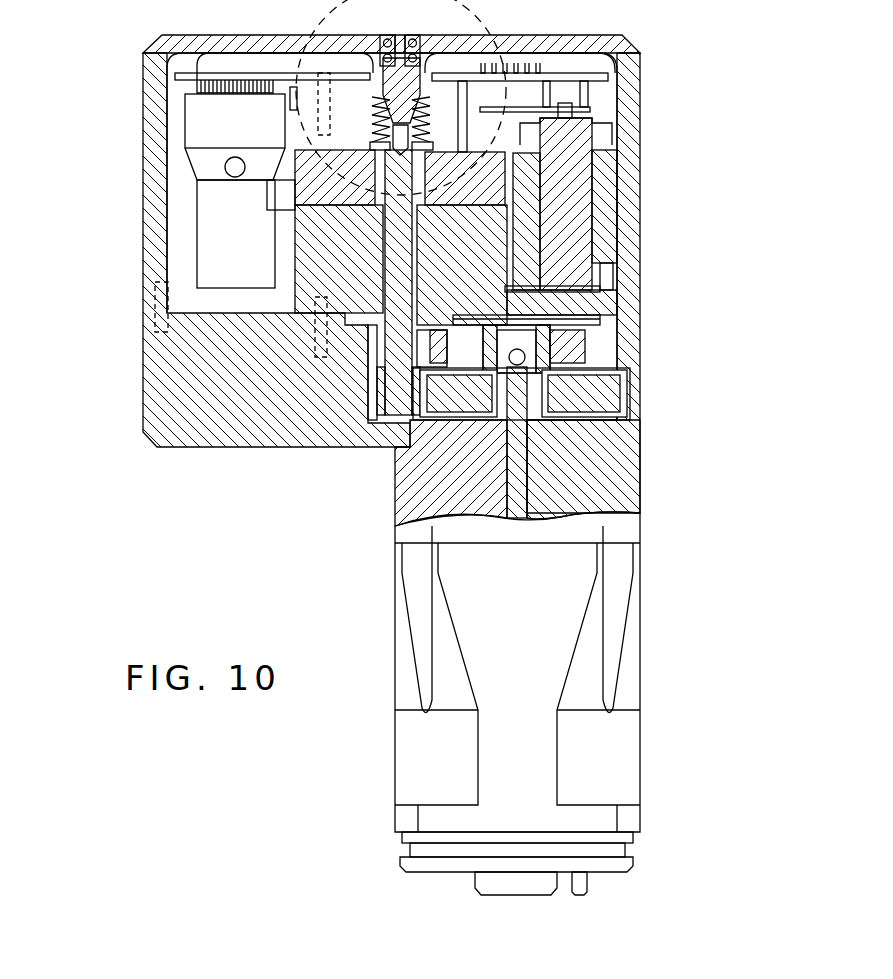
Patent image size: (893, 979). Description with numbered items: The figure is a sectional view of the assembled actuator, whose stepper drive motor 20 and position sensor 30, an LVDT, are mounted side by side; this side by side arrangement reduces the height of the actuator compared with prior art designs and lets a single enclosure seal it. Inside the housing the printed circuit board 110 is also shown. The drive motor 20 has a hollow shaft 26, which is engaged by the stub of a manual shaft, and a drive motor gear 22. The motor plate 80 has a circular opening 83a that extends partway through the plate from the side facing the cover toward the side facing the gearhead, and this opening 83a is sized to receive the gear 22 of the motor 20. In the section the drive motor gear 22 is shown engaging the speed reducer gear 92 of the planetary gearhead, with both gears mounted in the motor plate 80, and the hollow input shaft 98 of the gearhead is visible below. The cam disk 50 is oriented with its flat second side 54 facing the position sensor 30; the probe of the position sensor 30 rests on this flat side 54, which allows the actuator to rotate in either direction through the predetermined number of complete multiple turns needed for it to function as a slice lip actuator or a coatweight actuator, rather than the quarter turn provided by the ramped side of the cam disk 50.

The stepper drive motor 20 is at (310, 230).
The drive motor gear 22 is at (377, 391).
The hollow shaft 26 is at (400, 263).
The position sensor 30 is at (603, 208).
The cam disk 50 is at (587, 357).
The second side of cam disk 54 is at (582, 332).
The motor plate 80 is at (162, 400).
The circular opening 83a is at (373, 358).
The speed reducer gear 92 is at (437, 399).
The hollow input shaft 98 is at (523, 480).
The printed circuit board 110 is at (600, 73).